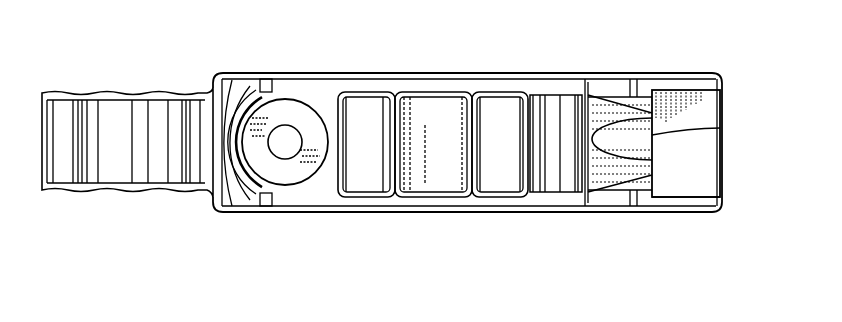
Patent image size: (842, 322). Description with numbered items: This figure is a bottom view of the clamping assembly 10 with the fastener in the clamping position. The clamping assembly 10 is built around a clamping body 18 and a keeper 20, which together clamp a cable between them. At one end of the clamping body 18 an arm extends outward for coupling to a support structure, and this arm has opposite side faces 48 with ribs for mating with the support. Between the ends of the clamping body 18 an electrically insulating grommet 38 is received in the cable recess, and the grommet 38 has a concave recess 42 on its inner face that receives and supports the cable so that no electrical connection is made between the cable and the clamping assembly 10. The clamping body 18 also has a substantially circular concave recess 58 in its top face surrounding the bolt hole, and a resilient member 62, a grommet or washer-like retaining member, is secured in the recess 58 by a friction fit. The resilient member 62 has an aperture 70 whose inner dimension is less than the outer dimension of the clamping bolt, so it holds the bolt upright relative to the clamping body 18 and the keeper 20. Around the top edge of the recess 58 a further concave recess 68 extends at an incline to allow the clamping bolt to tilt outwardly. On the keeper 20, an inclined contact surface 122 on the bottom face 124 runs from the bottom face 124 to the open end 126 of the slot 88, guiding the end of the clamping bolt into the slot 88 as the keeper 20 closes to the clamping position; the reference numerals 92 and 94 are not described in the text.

The clamping assembly 10 is at (134, 63).
The side faces 48 is at (115, 192).
The clamping body 18 is at (241, 219).
The concave recess 68 is at (230, 112).
The concave recess 58 is at (247, 110).
The resilient member 62 is at (292, 95).
The aperture 70 is at (285, 148).
The electrically insulating grommet 38 is at (370, 89).
The concave recess 42 is at (437, 127).
The keeper 20 is at (656, 220).
The bottom face 124 is at (582, 200).
The inclined contact surface 122 is at (605, 115).
The open end 126 is at (658, 112).
The slot 88 is at (632, 147).
The insertion direction 92 is at (686, 152).
The port floor 94 is at (652, 183).